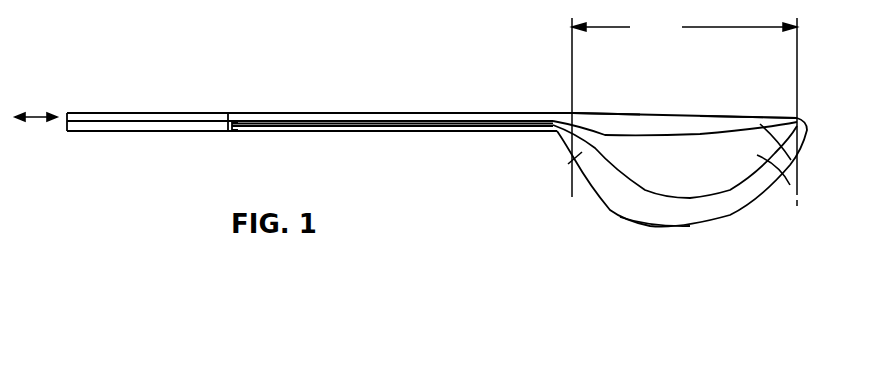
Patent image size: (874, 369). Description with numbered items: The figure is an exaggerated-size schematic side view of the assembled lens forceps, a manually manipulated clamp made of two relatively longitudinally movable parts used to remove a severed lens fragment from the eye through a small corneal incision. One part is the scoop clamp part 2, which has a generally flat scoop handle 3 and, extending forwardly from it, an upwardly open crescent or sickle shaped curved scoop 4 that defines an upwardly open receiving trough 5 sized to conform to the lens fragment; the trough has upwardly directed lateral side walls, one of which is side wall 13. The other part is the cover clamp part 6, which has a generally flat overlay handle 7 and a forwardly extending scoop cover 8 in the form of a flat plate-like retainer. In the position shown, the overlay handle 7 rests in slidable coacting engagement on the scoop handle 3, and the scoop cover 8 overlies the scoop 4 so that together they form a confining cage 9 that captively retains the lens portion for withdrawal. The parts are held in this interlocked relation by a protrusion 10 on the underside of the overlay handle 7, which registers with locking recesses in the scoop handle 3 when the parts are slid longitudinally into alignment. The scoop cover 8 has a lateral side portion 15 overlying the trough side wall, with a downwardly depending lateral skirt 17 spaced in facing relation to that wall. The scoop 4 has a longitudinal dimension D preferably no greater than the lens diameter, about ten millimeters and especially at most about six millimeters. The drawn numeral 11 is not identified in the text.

The scoop clamp part 2 is at (583, 157).
The scoop handle 3 is at (311, 131).
The scoop 4 is at (613, 202).
The receiving trough 5 is at (721, 192).
The cover clamp part 6 is at (610, 124).
The overlay handle 7 is at (295, 113).
The scoop cover 8 is at (793, 158).
The confining cage 9 is at (790, 185).
The protrusion 10 is at (500, 122).
The tube wall 11 is at (500, 132).
The lateral side wall 13 is at (658, 205).
The lateral side portion 15 is at (740, 117).
The lateral skirt 17 is at (646, 134).
The longitudinal dimension D is at (684, 111).